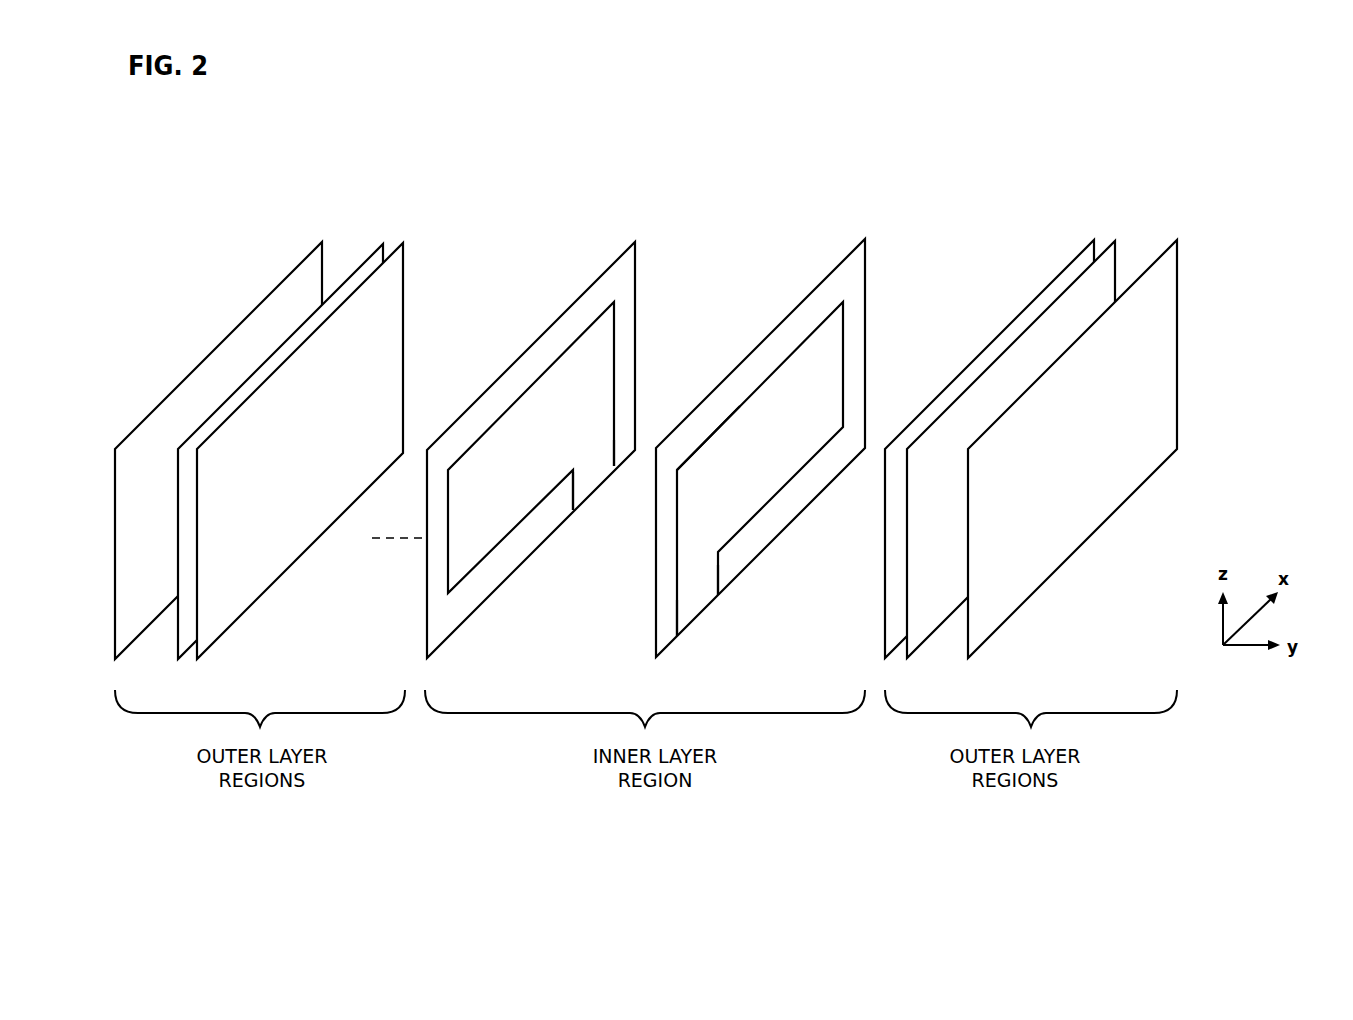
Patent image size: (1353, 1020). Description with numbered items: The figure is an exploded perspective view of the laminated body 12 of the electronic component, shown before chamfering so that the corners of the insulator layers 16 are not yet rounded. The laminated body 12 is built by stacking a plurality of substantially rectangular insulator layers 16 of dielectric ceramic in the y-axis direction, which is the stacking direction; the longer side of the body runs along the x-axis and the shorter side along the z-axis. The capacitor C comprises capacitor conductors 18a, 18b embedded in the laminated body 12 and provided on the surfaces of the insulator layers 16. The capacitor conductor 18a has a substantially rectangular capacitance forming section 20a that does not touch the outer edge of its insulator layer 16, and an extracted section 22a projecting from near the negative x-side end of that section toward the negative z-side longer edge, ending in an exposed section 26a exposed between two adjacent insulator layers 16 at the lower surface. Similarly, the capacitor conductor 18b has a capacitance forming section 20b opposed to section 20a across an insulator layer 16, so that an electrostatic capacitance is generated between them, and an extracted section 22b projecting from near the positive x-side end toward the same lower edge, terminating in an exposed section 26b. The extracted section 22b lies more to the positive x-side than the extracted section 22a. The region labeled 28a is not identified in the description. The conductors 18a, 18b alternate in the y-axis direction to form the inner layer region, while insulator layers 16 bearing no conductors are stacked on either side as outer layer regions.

The laminated body 12 is at (185, 146).
The insulator layer 16 is at (322, 243).
The capacitor conductor 18a is at (783, 332).
The capacitor conductor 18b is at (523, 374).
The capacitance forming section 20a is at (828, 353).
The capacitance forming section 20b is at (482, 463).
The extracted section 22a is at (695, 592).
The extracted section 22b is at (587, 482).
The exposed section 26a is at (708, 607).
The exposed section 26b is at (603, 485).
The coil portion 28a is at (708, 392).
The capacitor C is at (693, 258).